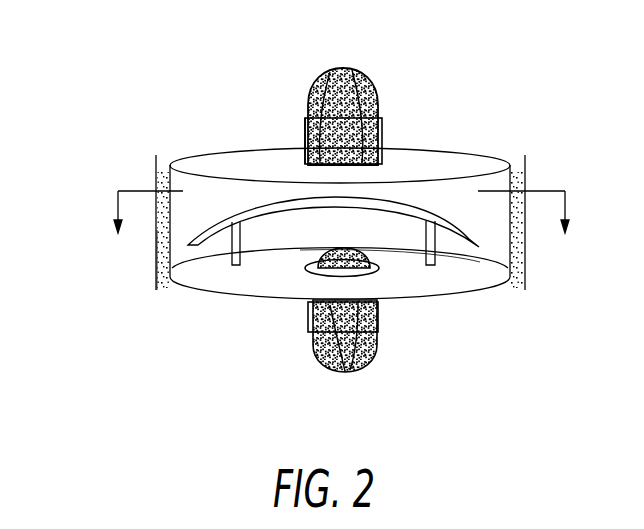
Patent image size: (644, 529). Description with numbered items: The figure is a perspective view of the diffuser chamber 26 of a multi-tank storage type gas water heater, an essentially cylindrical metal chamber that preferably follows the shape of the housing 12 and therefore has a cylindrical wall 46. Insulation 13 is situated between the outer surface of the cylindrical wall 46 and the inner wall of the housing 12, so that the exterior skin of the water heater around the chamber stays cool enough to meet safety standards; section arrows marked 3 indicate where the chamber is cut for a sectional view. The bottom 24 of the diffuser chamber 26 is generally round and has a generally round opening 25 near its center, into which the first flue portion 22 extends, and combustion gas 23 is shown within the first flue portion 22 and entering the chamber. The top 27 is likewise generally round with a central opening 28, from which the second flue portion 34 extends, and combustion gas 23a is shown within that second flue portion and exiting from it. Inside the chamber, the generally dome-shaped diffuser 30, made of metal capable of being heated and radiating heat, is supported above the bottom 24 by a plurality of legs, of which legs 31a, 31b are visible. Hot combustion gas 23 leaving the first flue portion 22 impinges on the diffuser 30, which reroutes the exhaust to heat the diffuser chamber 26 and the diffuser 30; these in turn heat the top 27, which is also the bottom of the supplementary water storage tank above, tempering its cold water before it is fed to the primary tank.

The section line for FIG. 3 is at (341, 194).
The housing 12 is at (160, 183).
The insulation 13 is at (525, 237).
The first flue portion 22 is at (308, 318).
The combustion gas 23 is at (355, 365).
The combustion gas 23a is at (369, 100).
The bottom 24 is at (205, 275).
The opening 25 is at (316, 262).
The diffuser chamber 26 is at (410, 292).
The top 27 is at (253, 163).
The opening 28 is at (379, 135).
The diffuser 30 is at (409, 207).
The leg 31a is at (240, 272).
The leg 31b is at (467, 266).
The second flue portion 34 is at (307, 128).
The cylindrical wall 46 is at (157, 232).